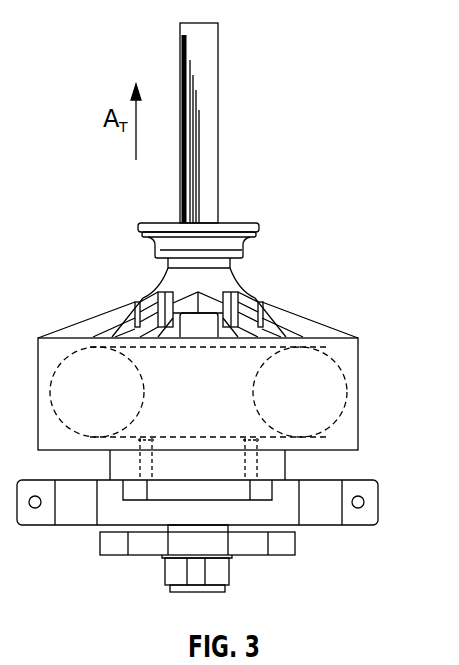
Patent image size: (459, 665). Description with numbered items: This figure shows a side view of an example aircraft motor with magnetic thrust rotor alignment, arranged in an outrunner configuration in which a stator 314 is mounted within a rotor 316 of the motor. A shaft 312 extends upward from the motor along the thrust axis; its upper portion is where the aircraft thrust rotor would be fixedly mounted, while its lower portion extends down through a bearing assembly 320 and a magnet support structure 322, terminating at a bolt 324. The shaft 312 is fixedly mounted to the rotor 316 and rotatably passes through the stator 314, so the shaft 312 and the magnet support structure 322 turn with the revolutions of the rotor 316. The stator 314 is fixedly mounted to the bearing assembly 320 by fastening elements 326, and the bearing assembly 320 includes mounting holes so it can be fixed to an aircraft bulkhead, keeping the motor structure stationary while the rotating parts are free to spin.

The shaft 312 is at (205, 77).
The stator 314 is at (332, 385).
The rotor 316 is at (367, 408).
The bearing assembly 320 is at (365, 475).
The magnet support structure 322 is at (300, 542).
The bolt 324 is at (165, 575).
The fastening elements 326 is at (150, 452).